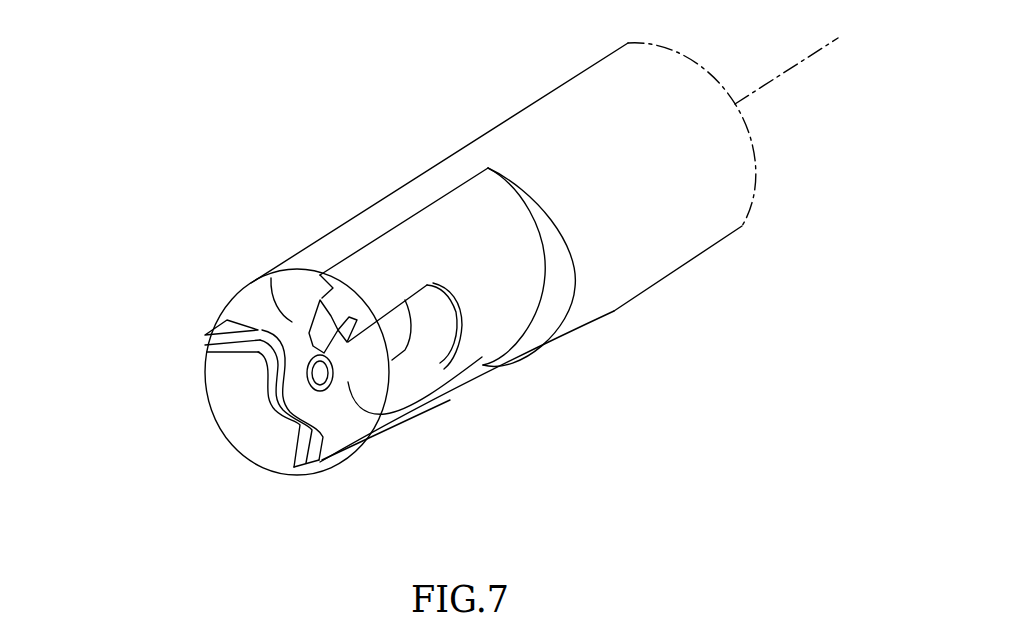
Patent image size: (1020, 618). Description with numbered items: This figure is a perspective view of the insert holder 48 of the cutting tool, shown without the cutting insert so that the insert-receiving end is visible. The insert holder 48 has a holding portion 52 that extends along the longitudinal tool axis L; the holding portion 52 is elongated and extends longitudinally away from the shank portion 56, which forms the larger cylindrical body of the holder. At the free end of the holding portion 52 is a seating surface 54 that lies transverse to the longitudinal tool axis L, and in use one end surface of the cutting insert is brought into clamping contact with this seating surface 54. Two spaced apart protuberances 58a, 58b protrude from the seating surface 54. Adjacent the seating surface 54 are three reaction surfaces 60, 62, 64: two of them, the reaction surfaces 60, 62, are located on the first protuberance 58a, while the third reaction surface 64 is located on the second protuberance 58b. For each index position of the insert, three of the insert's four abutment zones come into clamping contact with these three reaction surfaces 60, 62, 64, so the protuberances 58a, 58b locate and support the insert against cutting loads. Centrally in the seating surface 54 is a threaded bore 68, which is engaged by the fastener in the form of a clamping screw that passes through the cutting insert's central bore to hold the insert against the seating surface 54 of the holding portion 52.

The insert holder 48 is at (351, 183).
The holding portion 52 is at (398, 356).
The seating surface 54 is at (341, 448).
The shank portion 56 is at (643, 228).
The first protuberance 58a is at (245, 446).
The second protuberance 58b is at (320, 289).
The reaction surface 60 is at (320, 466).
The reaction surface 62 is at (267, 332).
The reaction surface 64 is at (318, 318).
The threaded bore 68 is at (348, 379).
The longitudinal tool axis L is at (796, 57).